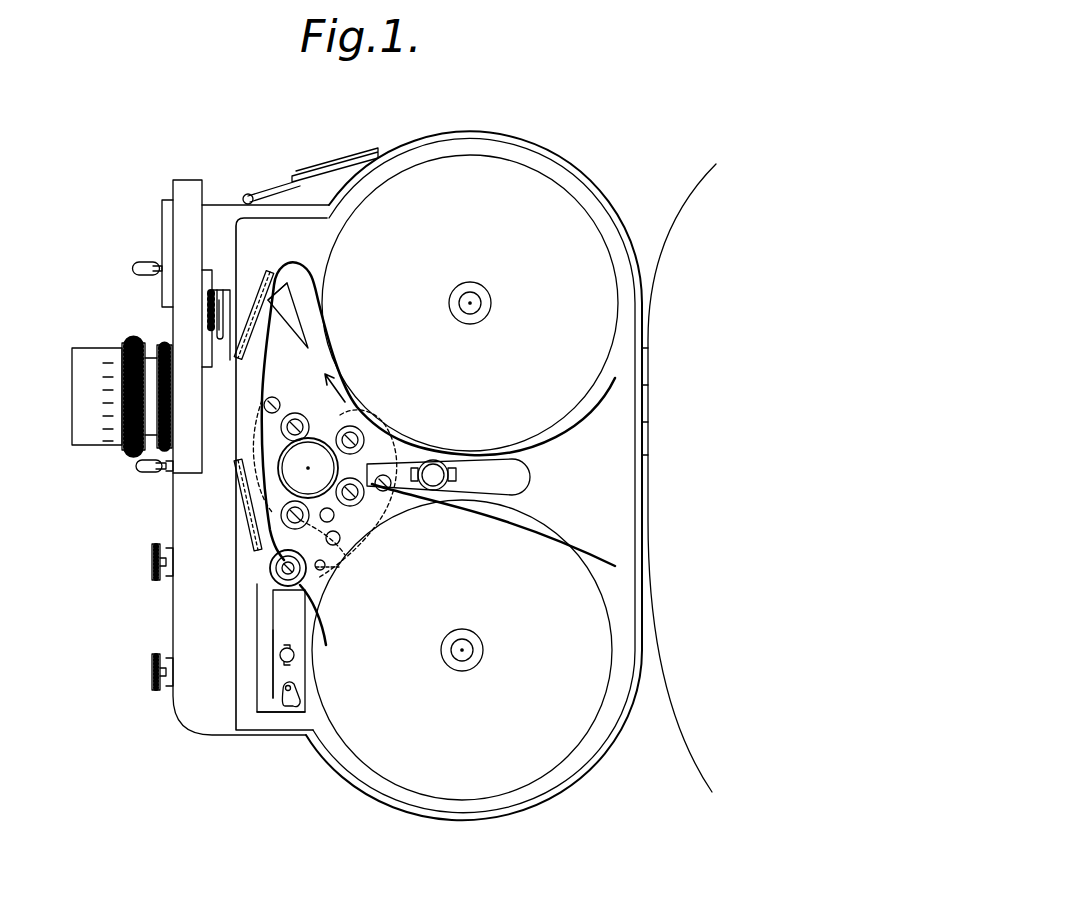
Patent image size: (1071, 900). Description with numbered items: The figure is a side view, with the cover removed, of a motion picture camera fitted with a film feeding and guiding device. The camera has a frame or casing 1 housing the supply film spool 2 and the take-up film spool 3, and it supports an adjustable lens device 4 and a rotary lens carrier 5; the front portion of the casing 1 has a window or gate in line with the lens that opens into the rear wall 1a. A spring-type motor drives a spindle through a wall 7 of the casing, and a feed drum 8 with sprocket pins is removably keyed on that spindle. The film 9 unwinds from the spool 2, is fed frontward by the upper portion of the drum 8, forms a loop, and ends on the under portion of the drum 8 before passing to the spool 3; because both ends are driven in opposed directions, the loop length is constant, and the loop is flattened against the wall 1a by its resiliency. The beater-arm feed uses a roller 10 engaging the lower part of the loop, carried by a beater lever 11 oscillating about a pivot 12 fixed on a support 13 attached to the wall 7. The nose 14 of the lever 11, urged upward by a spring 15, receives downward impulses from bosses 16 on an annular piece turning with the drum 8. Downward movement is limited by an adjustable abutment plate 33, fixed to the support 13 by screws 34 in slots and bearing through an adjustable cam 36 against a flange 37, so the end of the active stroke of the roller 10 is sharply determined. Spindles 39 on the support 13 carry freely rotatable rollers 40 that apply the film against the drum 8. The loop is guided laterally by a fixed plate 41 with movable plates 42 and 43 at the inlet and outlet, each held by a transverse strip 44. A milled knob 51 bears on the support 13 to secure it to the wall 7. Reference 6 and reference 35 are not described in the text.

The casing 1 is at (521, 140).
The rear wall 1a is at (240, 306).
The supply film spool 2 is at (565, 211).
The take-up film spool 3 is at (508, 732).
The adjustable lens device 4 is at (133, 446).
The rotary lens carrier 5 is at (176, 452).
The fastening knobs 6 is at (151, 678).
The wall 7 is at (600, 500).
The feed drum 8 is at (306, 470).
The film 9 is at (302, 292).
The roller 10 is at (296, 582).
The beater lever 11 is at (322, 563).
The pivot 12 is at (340, 522).
The support 13 is at (498, 478).
The nose 14 is at (375, 512).
The spring 15 is at (345, 557).
The bosses 16 is at (276, 512).
The abutment plate 33 is at (290, 622).
The screws 34 is at (295, 656).
The bracket plate 35 is at (273, 668).
The cam 36 is at (301, 690).
The flange 37 is at (270, 714).
The spindles 39 is at (355, 432).
The rollers 40 is at (362, 448).
The plate 41 is at (280, 306).
The movable plate 42 is at (272, 284).
The movable plate 43 is at (256, 560).
The strip 44 is at (285, 322).
The milled knob 51 is at (440, 483).